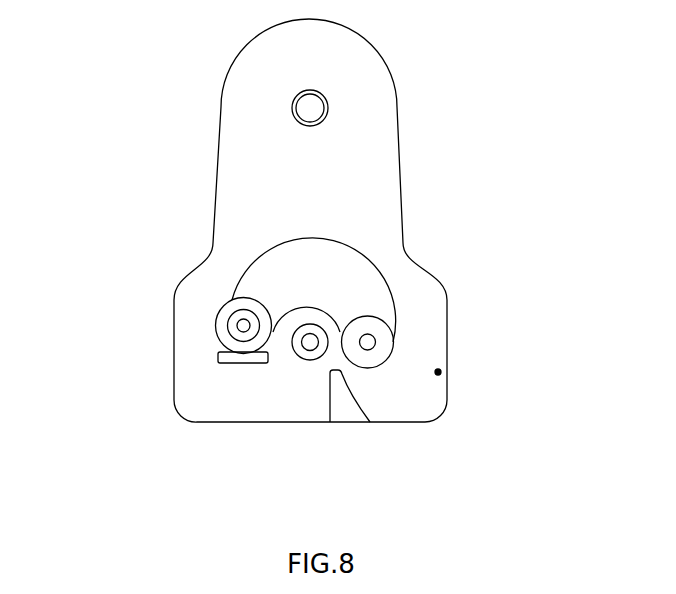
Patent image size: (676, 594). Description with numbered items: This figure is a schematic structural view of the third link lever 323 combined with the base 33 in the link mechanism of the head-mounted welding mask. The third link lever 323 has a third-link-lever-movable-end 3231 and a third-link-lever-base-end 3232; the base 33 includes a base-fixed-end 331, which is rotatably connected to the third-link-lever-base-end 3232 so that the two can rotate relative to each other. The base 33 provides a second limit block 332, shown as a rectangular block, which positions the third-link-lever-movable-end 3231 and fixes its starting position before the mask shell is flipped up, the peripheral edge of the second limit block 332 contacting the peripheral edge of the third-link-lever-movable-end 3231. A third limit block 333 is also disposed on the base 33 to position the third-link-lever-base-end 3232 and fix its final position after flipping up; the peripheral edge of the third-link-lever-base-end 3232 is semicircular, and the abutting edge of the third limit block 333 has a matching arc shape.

The base 33 is at (257, 112).
The third link lever 323 is at (318, 270).
The third-link-lever-movable-end 3231 is at (243, 325).
The third-link-lever-base-end 3232 is at (378, 338).
The base-fixed-end 331 is at (309, 343).
The second limit block 332 is at (242, 362).
The third limit block 333 is at (342, 407).